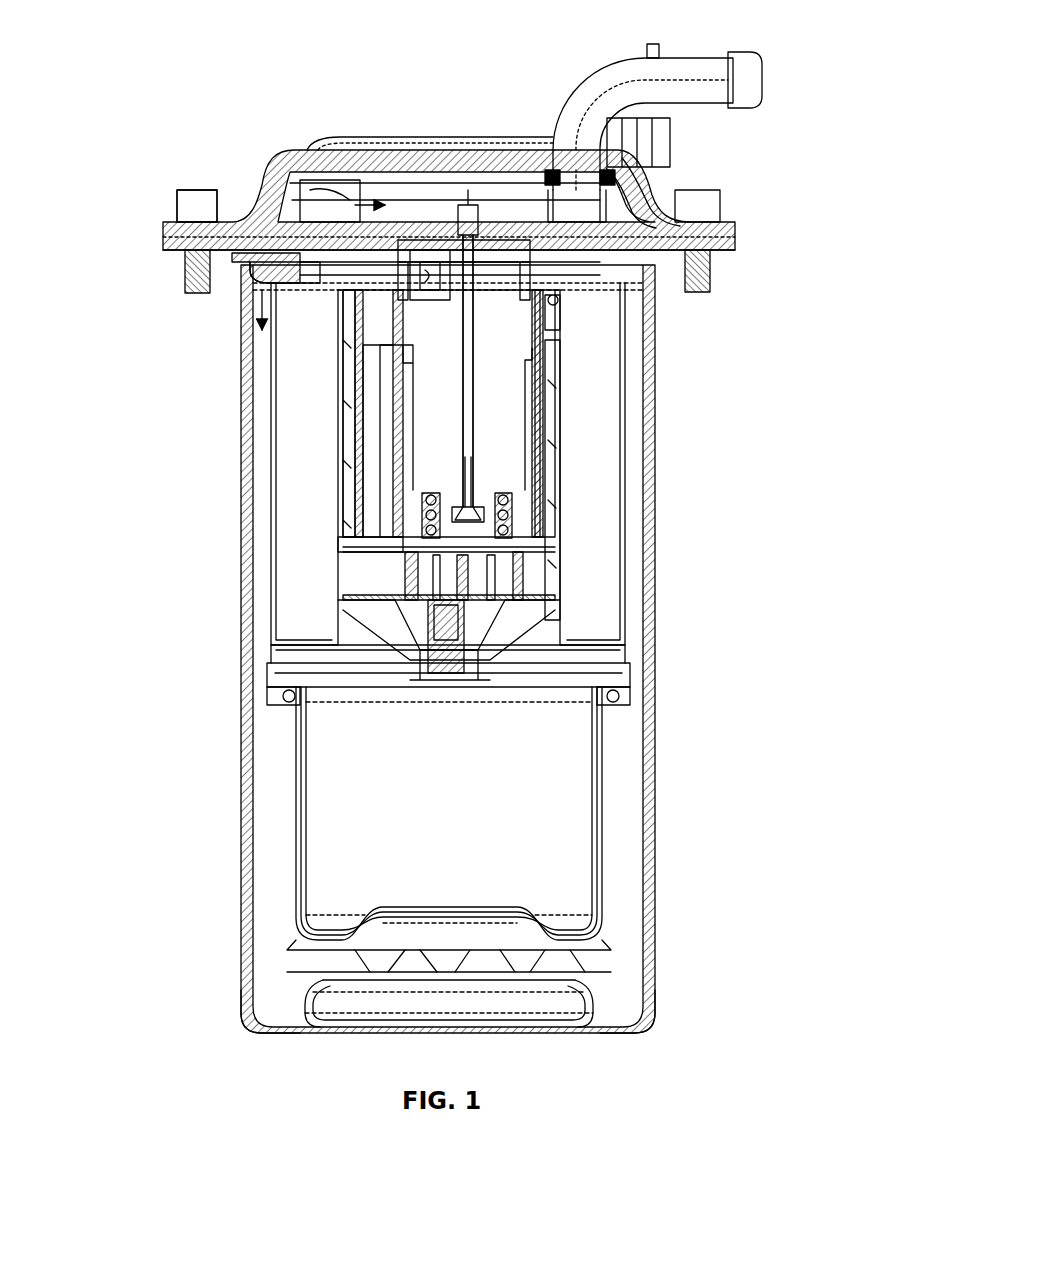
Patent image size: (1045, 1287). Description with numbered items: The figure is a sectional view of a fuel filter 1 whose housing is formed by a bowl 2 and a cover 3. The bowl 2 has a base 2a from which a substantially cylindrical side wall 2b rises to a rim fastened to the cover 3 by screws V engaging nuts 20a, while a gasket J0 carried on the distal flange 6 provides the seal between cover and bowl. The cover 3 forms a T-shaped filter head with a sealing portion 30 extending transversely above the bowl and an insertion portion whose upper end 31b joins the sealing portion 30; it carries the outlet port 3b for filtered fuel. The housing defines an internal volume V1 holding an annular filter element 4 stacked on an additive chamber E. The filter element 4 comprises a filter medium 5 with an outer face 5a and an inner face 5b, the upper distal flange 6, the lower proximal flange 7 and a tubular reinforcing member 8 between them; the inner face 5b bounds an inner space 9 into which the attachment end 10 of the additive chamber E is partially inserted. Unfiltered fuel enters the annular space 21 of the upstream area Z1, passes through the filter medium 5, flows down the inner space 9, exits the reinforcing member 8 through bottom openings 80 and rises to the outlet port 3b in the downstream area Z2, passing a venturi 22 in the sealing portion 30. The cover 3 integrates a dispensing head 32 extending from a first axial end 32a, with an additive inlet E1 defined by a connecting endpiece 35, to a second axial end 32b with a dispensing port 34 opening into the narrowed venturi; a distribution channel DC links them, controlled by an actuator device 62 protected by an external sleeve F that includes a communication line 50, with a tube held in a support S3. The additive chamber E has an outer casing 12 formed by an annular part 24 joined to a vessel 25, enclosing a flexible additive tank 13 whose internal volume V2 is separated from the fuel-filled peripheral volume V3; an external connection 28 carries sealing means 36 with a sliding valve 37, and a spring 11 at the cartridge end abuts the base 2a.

The filter 1 is at (668, 1078).
The bowl 2 is at (246, 557).
The base 2a is at (652, 1012).
The side wall 2b is at (246, 994).
The cover 3 is at (155, 238).
The outlet port 3b is at (598, 95).
The filter element 4 is at (630, 545).
The filter medium 5 is at (300, 515).
The outer face 5a is at (345, 432).
The inner face 5b is at (355, 455).
The distal flange 6 is at (290, 266).
The proximal flange 7 is at (560, 632).
The reinforcing member 8 is at (355, 470).
The inner space 9 is at (556, 323).
The attachment end 10 is at (430, 640).
The spring 11 is at (304, 950).
The outer casing 12 is at (612, 942).
The additive tank 13 is at (570, 880).
The nuts 20a is at (706, 265).
The annular space 21 is at (254, 316).
The venturi 22 is at (480, 226).
The annular part 24 is at (582, 674).
The vessel 25 is at (608, 820).
The external connection 28 is at (440, 682).
The sealing portion 30 is at (652, 195).
The upper end 31b is at (549, 205).
The dispensing head 32 is at (480, 488).
The first axial end 32a is at (410, 570).
The second axial end 32b is at (445, 250).
The dispensing port 34 is at (468, 230).
The connecting endpiece 35 is at (420, 600).
The sealing means 36 is at (600, 692).
The valve 37 is at (430, 678).
The communication line 50 is at (375, 352).
The actuator device 62 is at (562, 418).
The bottom openings 80 is at (350, 560).
The distribution channel DC is at (490, 442).
The additive chamber E is at (278, 823).
The additive inlet E1 is at (485, 580).
The external sleeve F is at (500, 388).
The gasket J0 is at (215, 257).
The support S3 is at (437, 240).
The screws V is at (190, 212).
The internal volume V1 is at (276, 742).
The internal volume of the tank V2 is at (522, 872).
The peripheral volume V3 is at (298, 945).
The upstream area Z1 is at (630, 318).
The downstream area Z2 is at (560, 426).